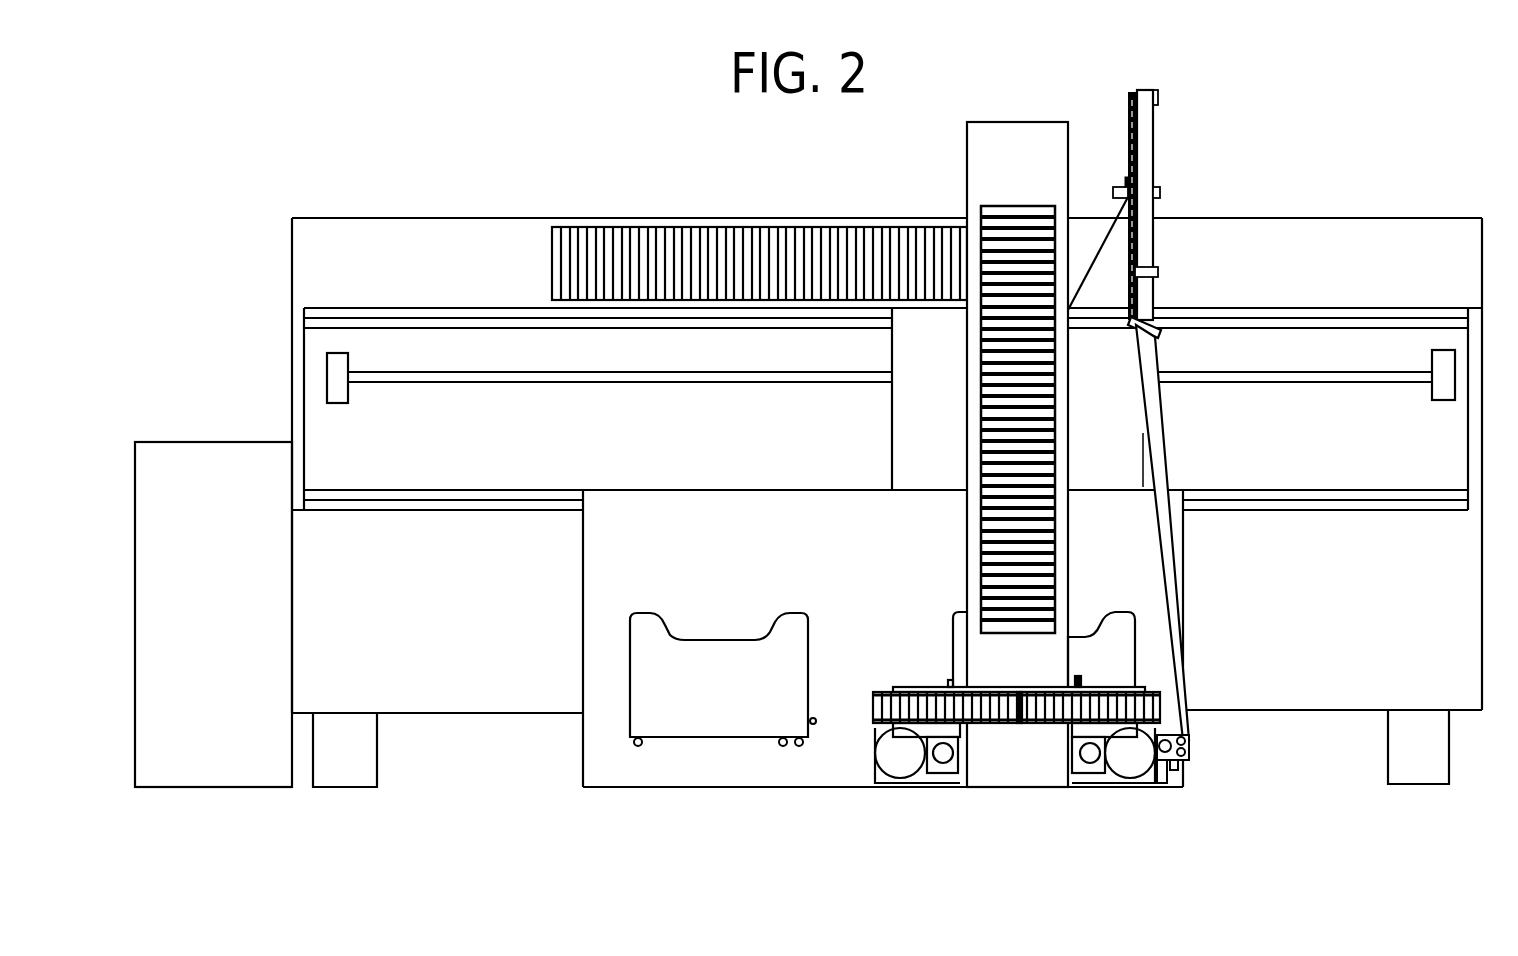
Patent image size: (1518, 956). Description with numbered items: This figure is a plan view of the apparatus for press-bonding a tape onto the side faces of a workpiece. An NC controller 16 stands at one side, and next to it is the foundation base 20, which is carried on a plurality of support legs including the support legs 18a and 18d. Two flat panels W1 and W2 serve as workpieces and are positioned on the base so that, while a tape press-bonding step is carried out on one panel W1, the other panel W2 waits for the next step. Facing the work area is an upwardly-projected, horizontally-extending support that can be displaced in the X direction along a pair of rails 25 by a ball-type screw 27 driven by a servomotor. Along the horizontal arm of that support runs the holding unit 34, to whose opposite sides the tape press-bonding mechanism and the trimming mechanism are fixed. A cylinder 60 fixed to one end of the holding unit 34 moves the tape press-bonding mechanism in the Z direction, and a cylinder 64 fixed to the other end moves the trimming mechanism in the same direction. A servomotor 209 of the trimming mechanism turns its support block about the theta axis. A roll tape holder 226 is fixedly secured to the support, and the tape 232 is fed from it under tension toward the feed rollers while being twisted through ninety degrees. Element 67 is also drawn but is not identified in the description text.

The NC controller 16 is at (237, 776).
The support leg 18a is at (347, 776).
The support leg 18d is at (1412, 770).
The foundation base 20 is at (497, 703).
The rails 25 is at (569, 320).
The ball-type screw 27 is at (1268, 375).
The holding unit 34 is at (1015, 760).
The cylinder 60 is at (1090, 768).
The cylinder 64 is at (944, 768).
The wheel 67 is at (1130, 768).
The servomotor 209 is at (905, 768).
The roll tape holder 226 is at (1112, 216).
The tape 232 is at (1145, 165).
The panel W1 is at (713, 645).
The panel W2 is at (1100, 635).